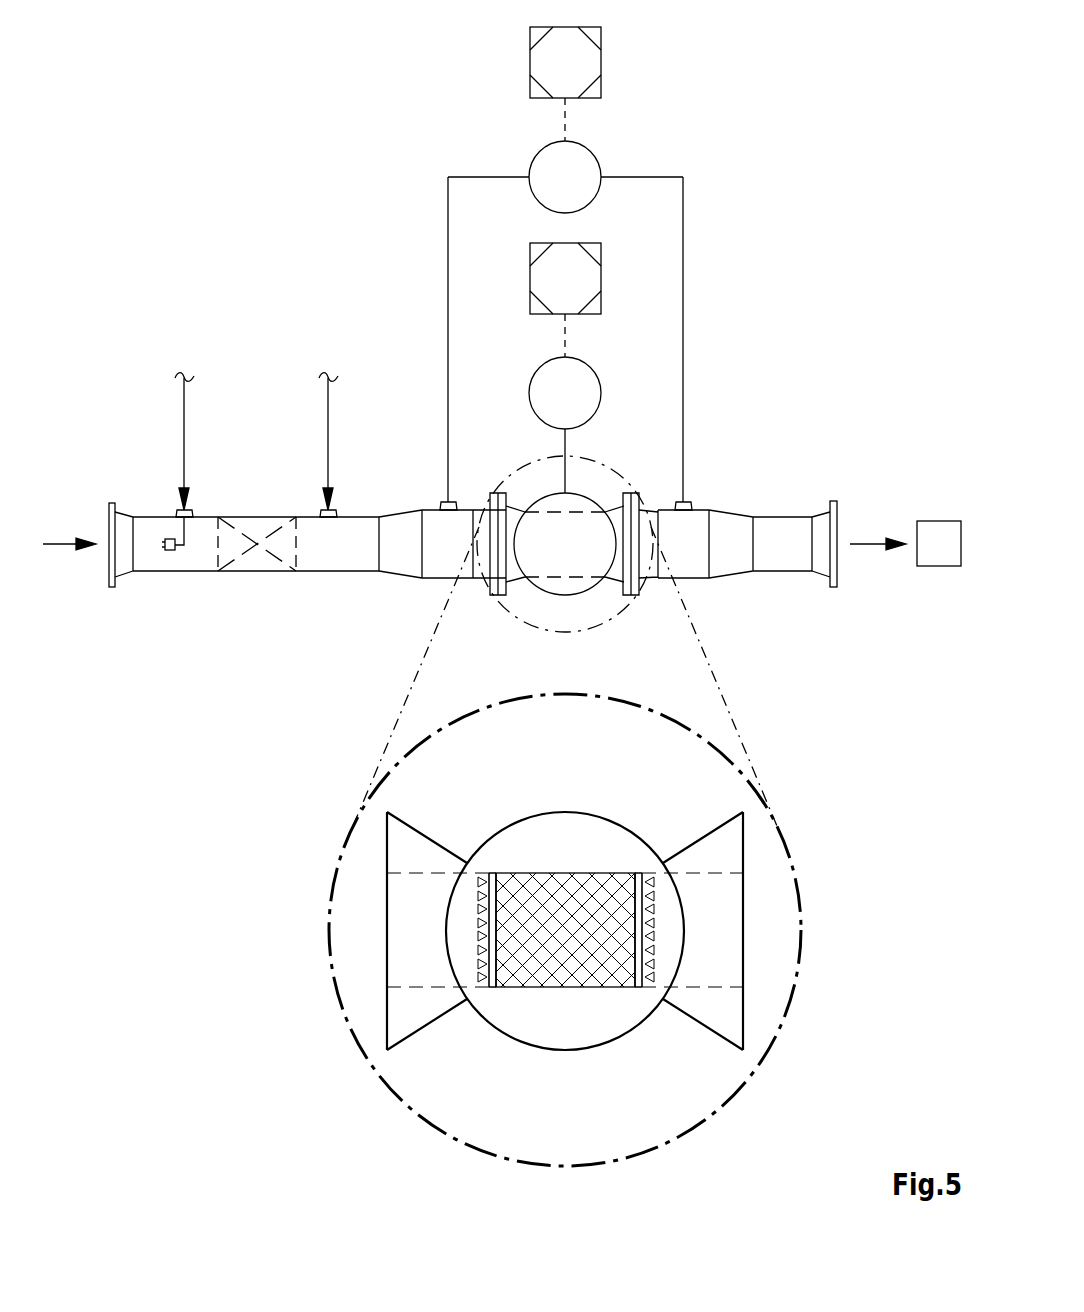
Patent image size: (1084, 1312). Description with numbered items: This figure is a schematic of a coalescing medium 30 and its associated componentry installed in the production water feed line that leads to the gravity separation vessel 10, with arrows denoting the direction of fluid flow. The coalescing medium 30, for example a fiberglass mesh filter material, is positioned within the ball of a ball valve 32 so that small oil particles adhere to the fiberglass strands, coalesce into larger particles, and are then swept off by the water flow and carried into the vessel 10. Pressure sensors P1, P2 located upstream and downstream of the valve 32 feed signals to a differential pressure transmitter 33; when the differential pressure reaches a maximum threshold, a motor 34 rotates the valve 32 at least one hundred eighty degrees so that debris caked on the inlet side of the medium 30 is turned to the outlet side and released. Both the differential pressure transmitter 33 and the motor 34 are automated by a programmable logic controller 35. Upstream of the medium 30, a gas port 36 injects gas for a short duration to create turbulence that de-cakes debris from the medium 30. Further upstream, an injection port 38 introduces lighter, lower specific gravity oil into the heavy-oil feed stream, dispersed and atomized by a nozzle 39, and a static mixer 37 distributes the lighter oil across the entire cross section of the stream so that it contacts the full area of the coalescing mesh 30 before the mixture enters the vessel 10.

The gravity separation vessel 10 is at (939, 543).
The coalescing medium 30 is at (567, 875).
The valve 32 is at (498, 597).
The differential pressure transmitter 33 is at (593, 154).
The motor 34 is at (593, 370).
The programmable logic controller 35 is at (603, 42).
The gas port 36 is at (322, 510).
The static mixer 37 is at (276, 572).
The injection port 38 is at (177, 510).
The nozzle 39 is at (171, 552).
The upstream pressure sensor P1 is at (446, 502).
The downstream pressure sensor P2 is at (690, 502).